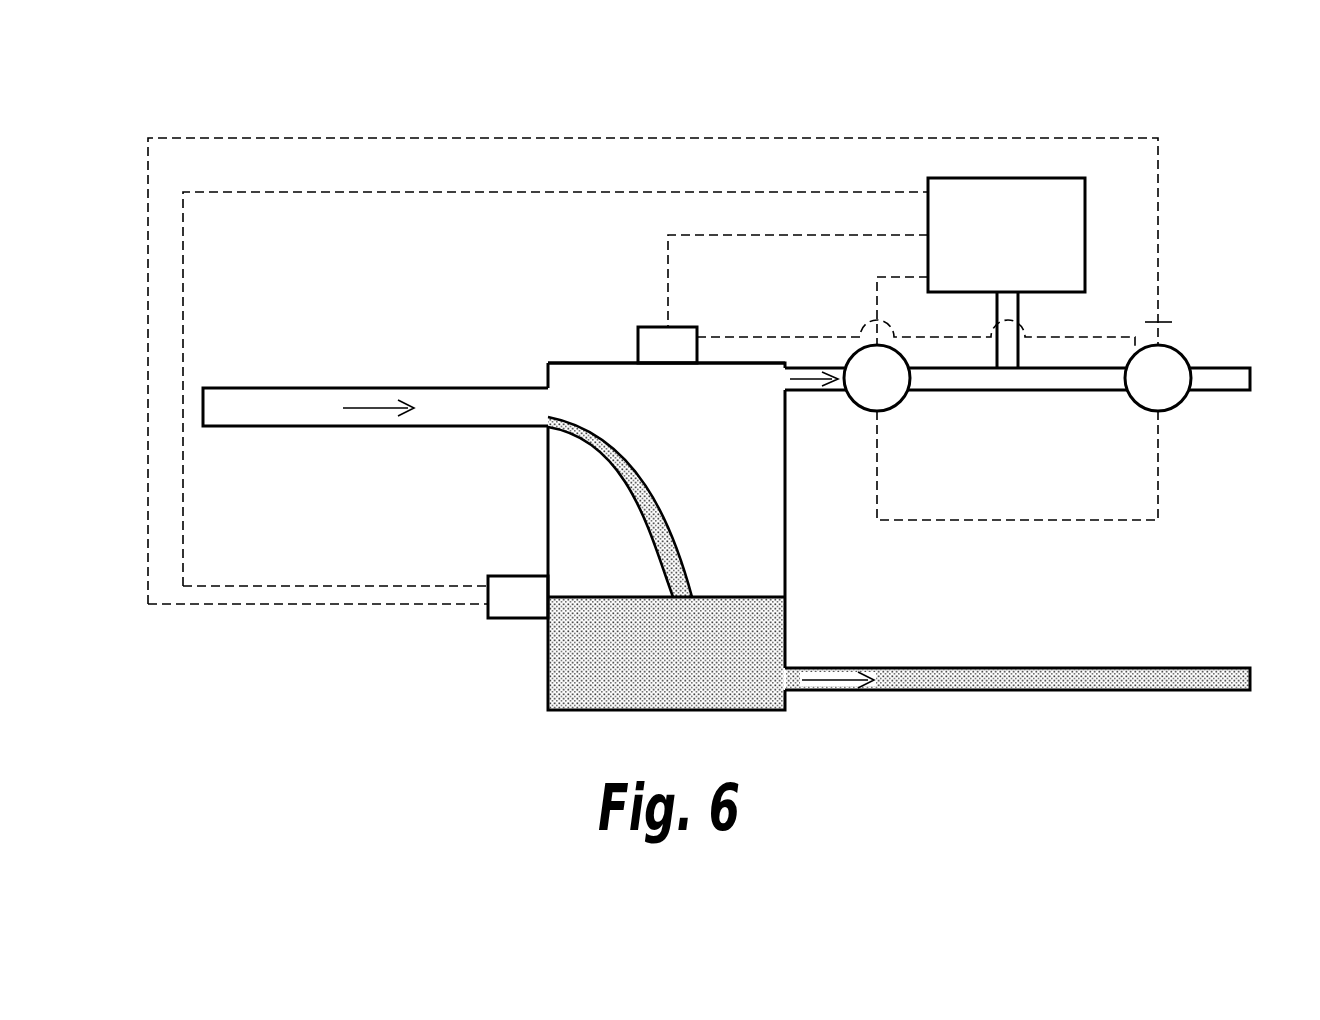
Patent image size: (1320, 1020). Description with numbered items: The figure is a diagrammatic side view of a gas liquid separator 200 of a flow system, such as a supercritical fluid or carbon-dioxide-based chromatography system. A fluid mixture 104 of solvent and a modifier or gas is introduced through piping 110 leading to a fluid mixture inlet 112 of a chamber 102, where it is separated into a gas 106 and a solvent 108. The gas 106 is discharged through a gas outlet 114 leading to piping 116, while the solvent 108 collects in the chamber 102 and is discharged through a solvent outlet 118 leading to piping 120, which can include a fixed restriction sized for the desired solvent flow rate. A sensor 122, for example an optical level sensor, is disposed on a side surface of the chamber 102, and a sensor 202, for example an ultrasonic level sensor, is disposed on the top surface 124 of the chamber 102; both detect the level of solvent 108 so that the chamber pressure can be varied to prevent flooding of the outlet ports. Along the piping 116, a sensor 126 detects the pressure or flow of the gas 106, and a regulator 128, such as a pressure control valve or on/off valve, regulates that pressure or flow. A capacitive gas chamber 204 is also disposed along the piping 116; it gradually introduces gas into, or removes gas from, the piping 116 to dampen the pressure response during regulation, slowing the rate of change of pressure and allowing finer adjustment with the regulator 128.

The gas liquid separator 200 is at (763, 105).
The chamber 102 is at (786, 528).
The fluid mixture 104 is at (262, 400).
The gas 106 is at (587, 390).
The solvent 108 is at (737, 605).
The piping 110 is at (412, 388).
The fluid mixture inlet 112 is at (549, 398).
The gas outlet 114 is at (798, 392).
The piping 116 is at (1023, 392).
The solvent outlet 118 is at (790, 666).
The piping 120 is at (945, 668).
The sensor 122 is at (523, 575).
The top surface 124 is at (723, 362).
The sensor 126 is at (897, 393).
The regulator 128 is at (1170, 357).
The sensor 202 is at (678, 327).
The capacitive gas chamber 204 is at (1085, 220).